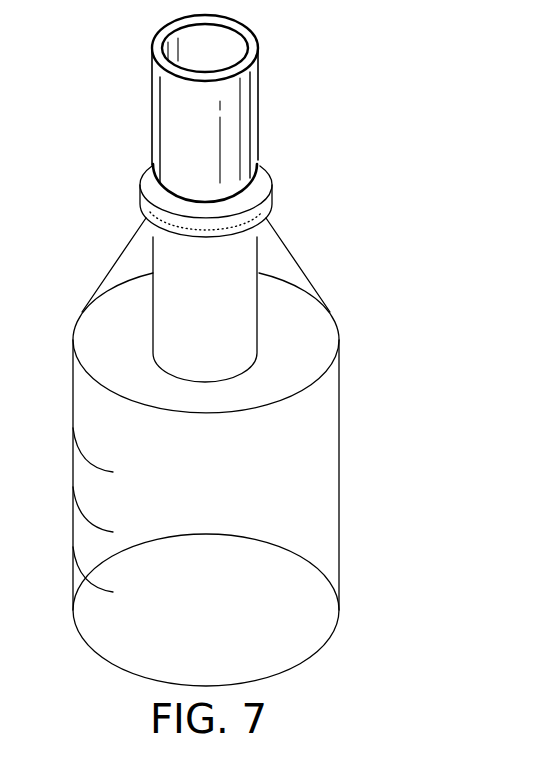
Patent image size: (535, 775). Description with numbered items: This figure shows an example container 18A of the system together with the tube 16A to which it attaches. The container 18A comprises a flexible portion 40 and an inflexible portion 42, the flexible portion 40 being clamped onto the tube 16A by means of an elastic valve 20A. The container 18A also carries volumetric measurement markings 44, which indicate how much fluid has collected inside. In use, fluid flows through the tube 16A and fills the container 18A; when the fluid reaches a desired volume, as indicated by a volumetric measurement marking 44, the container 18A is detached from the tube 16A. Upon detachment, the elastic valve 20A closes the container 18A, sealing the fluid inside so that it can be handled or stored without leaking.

The tube 16A is at (151, 104).
The elastic valve 20A is at (138, 192).
The flexible portion 40 is at (285, 258).
The container 18A is at (339, 425).
The inflexible portion 42 is at (330, 527).
The volumetric measurement markings 44 is at (98, 459).